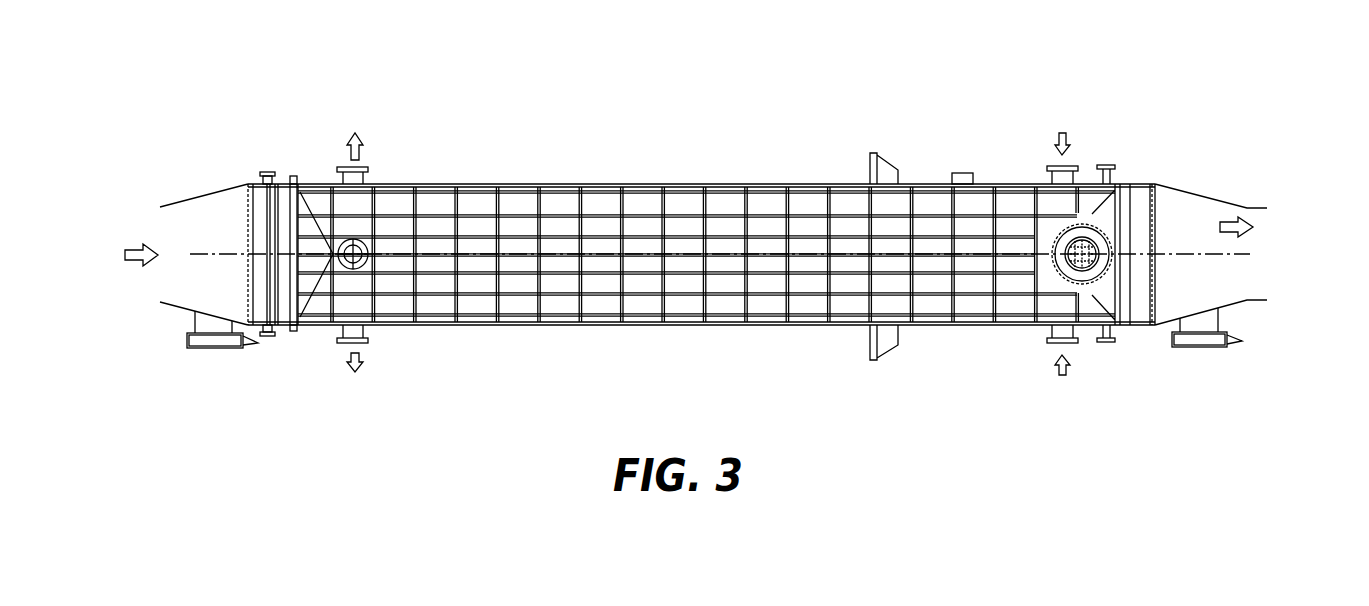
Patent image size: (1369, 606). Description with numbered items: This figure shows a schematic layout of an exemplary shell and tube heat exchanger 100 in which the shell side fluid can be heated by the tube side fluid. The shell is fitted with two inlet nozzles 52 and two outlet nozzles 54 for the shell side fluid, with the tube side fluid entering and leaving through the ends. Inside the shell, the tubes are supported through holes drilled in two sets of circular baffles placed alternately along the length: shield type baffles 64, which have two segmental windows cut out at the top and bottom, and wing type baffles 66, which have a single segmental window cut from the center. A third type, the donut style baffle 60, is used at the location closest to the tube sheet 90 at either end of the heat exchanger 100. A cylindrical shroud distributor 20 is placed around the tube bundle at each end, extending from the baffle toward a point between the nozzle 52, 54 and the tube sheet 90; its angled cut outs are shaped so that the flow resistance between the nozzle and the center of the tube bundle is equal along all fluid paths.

The heat exchanger 100 is at (697, 105).
The shroud distributor 20 is at (322, 190).
The tube sheet 90 is at (293, 203).
The inlet nozzle 52 is at (1075, 170).
The outlet nozzle 54 is at (357, 172).
The donut style baffle 60 is at (335, 207).
The shield type baffle 64 is at (415, 207).
The wing type baffle 66 is at (457, 207).